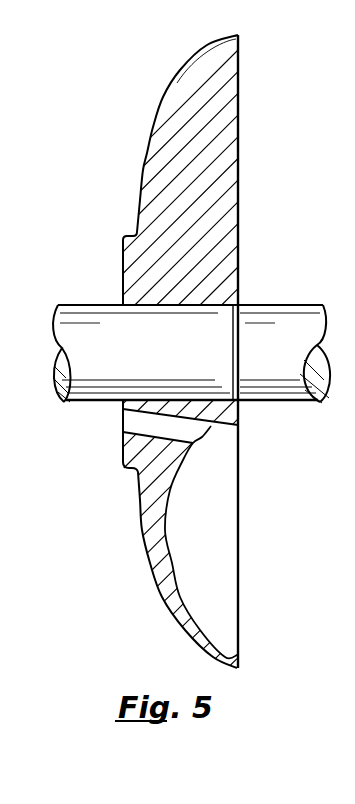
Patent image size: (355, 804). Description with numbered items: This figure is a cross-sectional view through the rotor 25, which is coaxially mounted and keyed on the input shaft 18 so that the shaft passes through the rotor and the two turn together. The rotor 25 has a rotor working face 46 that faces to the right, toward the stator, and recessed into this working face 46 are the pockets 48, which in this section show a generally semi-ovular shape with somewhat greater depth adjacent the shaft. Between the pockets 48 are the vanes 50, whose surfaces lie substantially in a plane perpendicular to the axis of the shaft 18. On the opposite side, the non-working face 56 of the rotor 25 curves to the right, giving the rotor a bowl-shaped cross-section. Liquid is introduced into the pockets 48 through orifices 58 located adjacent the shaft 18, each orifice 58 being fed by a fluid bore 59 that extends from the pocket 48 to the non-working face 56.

The input shaft 18 is at (275, 313).
The rotor 25 is at (144, 128).
The rotor working face 46 is at (248, 121).
The pockets 48 is at (218, 527).
The vanes 50 is at (220, 190).
The non-working face 56 is at (135, 208).
The orifices 58 is at (208, 434).
The fluid bore 59 is at (128, 427).